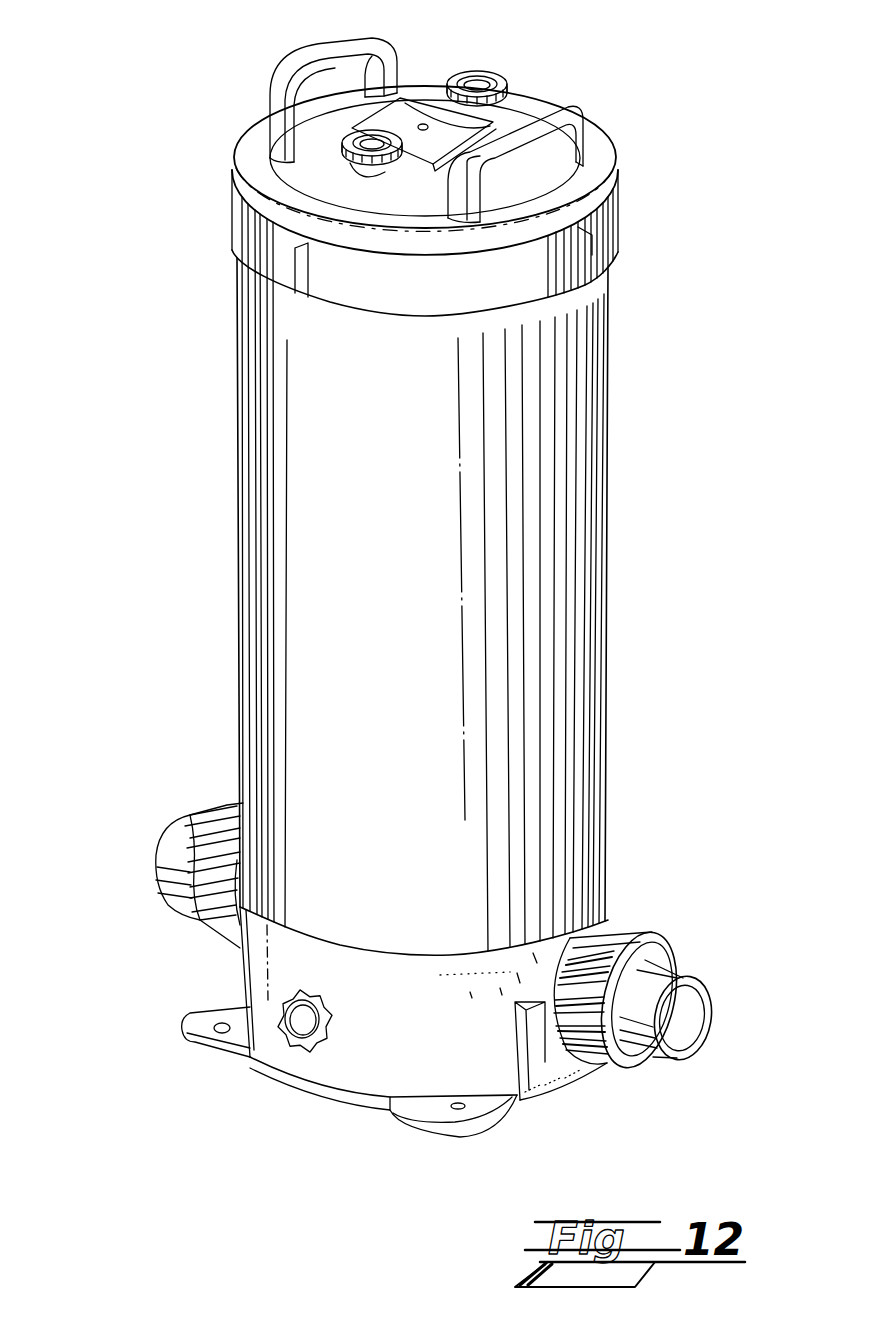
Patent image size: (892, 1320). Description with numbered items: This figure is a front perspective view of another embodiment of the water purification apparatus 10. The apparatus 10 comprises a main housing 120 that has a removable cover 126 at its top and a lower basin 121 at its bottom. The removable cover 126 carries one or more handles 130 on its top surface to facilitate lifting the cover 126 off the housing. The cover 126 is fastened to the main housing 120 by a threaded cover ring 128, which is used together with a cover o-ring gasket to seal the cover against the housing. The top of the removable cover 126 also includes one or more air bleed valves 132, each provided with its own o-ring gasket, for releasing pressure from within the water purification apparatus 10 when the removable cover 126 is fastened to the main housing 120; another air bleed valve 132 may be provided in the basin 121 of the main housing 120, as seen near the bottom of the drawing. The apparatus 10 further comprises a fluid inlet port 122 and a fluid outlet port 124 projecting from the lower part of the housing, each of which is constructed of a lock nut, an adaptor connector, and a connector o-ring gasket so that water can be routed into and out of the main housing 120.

The water purification apparatus 10 is at (733, 224).
The main housing 120 is at (607, 538).
The lower basin 121 is at (432, 1060).
The fluid inlet port 122 is at (731, 922).
The fluid outlet port 124 is at (113, 806).
The removable cover 126 is at (317, 173).
The threaded cover ring 128 is at (233, 242).
The handles 130 is at (297, 52).
The air bleed valves 132 is at (458, 68).